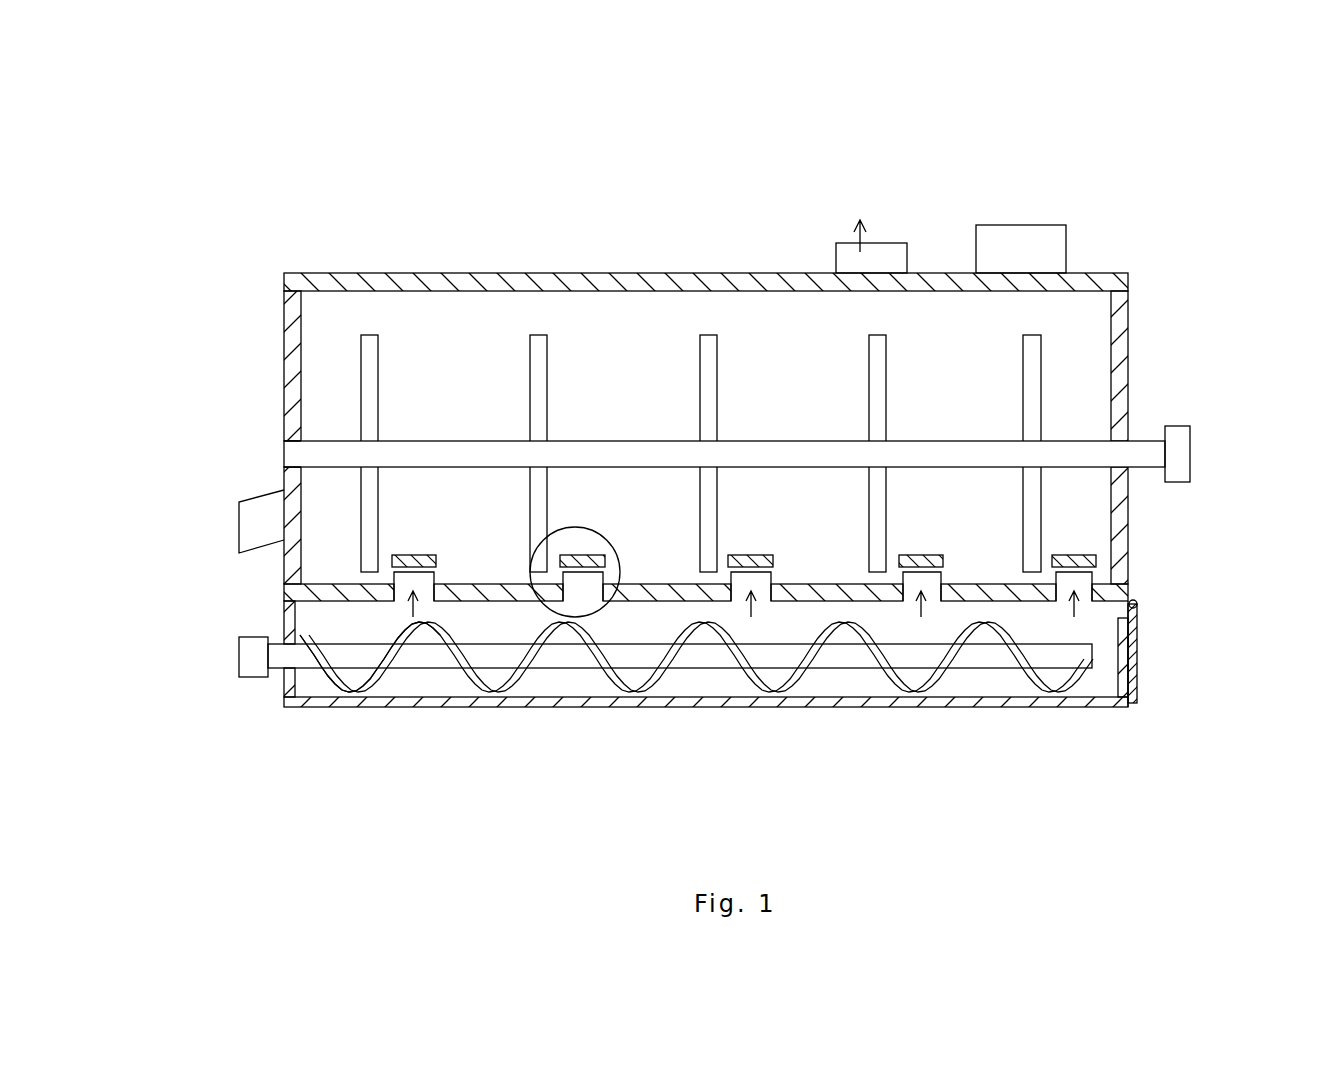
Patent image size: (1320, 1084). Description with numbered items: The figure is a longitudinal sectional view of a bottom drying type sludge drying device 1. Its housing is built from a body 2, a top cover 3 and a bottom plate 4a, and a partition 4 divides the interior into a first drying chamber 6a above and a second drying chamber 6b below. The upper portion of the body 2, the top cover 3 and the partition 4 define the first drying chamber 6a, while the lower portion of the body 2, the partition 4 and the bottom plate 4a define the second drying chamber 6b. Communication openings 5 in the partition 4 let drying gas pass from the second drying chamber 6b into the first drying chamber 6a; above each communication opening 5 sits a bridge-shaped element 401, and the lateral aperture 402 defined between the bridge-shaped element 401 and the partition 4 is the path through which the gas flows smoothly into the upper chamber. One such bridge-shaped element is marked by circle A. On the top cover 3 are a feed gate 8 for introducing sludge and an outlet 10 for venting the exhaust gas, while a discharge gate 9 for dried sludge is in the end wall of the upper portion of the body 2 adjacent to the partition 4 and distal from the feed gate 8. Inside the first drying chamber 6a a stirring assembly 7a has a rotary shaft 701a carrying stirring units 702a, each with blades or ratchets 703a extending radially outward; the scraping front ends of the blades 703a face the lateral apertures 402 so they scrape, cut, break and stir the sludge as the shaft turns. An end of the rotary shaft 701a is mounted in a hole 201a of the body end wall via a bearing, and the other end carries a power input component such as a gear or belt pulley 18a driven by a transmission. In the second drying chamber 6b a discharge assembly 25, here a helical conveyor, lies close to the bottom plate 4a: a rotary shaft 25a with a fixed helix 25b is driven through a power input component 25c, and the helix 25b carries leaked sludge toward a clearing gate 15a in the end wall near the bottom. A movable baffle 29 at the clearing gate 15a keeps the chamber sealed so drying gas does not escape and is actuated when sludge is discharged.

The bottom drying type sludge drying device 1 is at (1145, 320).
The body 2 is at (287, 395).
The hole 201a is at (284, 455).
The top cover 3 is at (308, 283).
The partition 4 is at (1010, 590).
The bridge-shaped element 401 is at (412, 559).
The lateral aperture 402 is at (773, 582).
The bottom plate 4a is at (610, 705).
The communication opening 5 is at (910, 590).
The first drying chamber 6a is at (378, 307).
The second drying chamber 6b is at (992, 682).
The stirring assembly 7a is at (563, 380).
The rotary shaft 701a is at (447, 455).
The stirring unit 702a is at (360, 387).
The blade 703a is at (708, 343).
The feed gate 8 is at (1018, 256).
The discharge gate 9 is at (248, 520).
The outlet 10 is at (893, 258).
The clearing gate 15a is at (1137, 703).
The belt pulley 18a is at (1177, 458).
The discharge assembly 25 is at (822, 677).
The rotary shaft 25a is at (315, 663).
The helix 25b is at (370, 677).
The power input component 25c is at (252, 655).
The movable baffle 29 is at (1137, 633).
The circle A is at (563, 618).